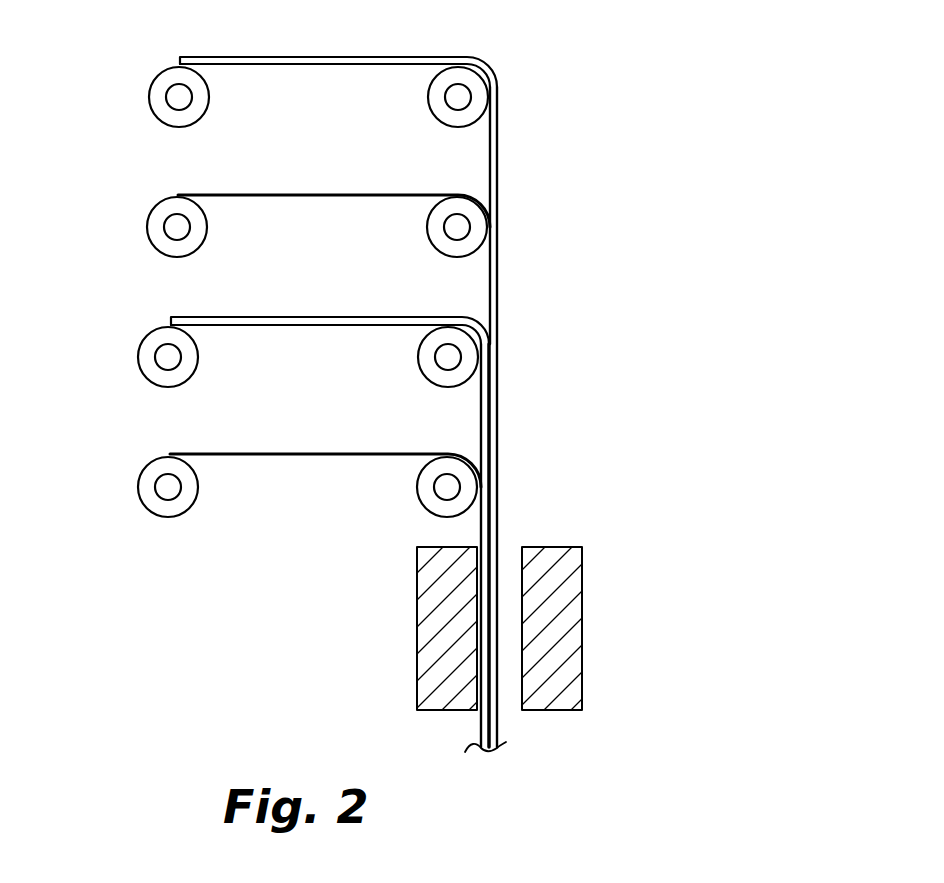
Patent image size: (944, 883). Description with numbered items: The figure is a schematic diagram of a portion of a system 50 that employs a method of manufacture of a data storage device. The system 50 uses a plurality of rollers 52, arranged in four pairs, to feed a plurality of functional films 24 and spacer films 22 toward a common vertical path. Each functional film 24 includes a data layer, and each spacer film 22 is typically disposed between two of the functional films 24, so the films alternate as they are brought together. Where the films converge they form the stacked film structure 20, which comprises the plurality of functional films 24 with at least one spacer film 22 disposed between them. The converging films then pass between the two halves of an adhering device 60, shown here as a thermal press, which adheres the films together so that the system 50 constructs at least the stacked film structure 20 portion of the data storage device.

The stacked film structure 20 is at (517, 753).
The spacer film 22 is at (297, 66).
The functional film 24 is at (298, 197).
The system 50 is at (571, 120).
The roller 52 is at (156, 99).
The adhering device 60 is at (592, 562).